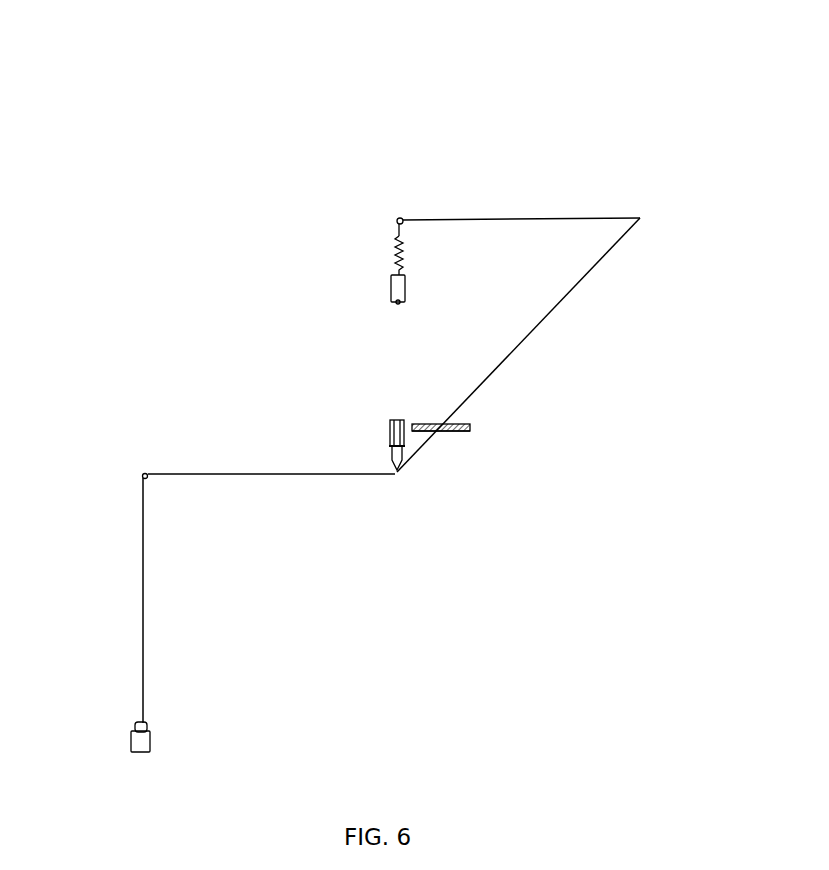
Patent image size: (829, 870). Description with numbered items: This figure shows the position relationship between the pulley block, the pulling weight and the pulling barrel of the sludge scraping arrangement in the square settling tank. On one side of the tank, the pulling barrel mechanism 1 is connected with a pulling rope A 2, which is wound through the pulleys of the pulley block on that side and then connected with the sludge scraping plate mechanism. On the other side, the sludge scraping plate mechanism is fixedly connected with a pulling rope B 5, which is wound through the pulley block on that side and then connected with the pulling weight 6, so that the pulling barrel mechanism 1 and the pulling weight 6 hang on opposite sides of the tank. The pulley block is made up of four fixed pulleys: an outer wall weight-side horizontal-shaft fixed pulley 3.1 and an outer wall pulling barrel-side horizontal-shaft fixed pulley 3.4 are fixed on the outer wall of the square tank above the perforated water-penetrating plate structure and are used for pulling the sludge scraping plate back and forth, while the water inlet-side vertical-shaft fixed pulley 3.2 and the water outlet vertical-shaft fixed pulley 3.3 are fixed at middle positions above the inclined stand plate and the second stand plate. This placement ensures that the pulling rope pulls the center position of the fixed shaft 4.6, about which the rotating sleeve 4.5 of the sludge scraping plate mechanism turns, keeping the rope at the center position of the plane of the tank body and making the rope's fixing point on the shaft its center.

The pulling barrel mechanism 1 is at (392, 448).
The pulling rope A 2 is at (215, 169).
The outer wall weight-side horizontal-shaft fixed pulley 3.1 is at (91, 440).
The water inlet-side vertical-shaft fixed pulley 3.2 is at (441, 510).
The water outlet vertical-shaft fixed pulley 3.3 is at (571, 295).
The outer wall pulling barrel-side horizontal-shaft fixed pulley 3.4 is at (214, 120).
The rotating sleeve 4.5 is at (573, 398).
The fixed shaft 4.6 is at (573, 452).
The pulling rope B 5 is at (89, 600).
The pulling weight 6 is at (92, 740).